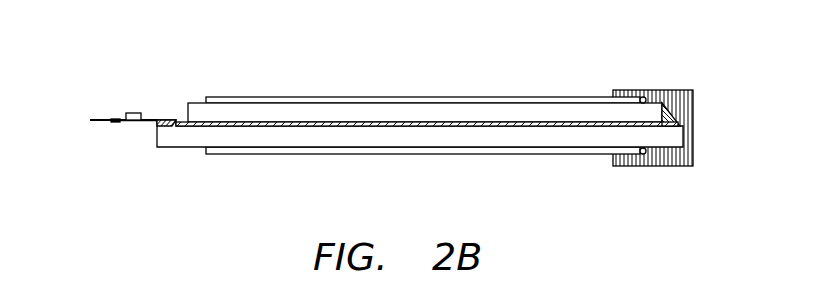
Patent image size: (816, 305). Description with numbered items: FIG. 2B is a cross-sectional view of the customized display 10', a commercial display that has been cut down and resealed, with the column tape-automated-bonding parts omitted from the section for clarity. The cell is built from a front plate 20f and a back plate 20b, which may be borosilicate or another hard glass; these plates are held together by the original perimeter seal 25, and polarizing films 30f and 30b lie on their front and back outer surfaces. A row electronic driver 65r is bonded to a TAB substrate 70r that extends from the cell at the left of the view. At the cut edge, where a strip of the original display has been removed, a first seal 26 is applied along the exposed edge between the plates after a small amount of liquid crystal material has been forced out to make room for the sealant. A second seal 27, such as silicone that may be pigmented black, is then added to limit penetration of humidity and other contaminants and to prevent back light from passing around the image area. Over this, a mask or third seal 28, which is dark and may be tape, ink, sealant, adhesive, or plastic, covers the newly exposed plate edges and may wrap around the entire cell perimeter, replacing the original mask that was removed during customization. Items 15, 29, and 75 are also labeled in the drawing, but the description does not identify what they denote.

The customized display 10' is at (593, 49).
The electrode tab 15 is at (95, 120).
The front plate 20f is at (188, 103).
The back plate 20b is at (155, 147).
The perimeter seal 25 is at (520, 127).
The first seal 26 is at (650, 127).
The second seal 27 is at (680, 120).
The mask or third seal 28 is at (686, 98).
The seal 29 is at (645, 97).
The front polarizing film 30f is at (237, 97).
The back polarizing film 30b is at (222, 154).
The row electronic driver 65r is at (134, 113).
The row TAB substrate 70r is at (147, 121).
The solder joint 75 is at (170, 128).